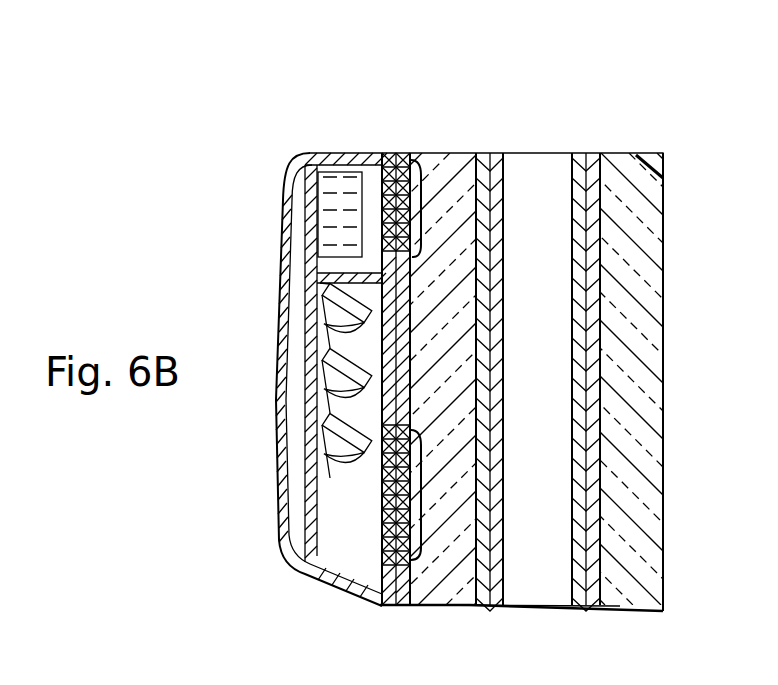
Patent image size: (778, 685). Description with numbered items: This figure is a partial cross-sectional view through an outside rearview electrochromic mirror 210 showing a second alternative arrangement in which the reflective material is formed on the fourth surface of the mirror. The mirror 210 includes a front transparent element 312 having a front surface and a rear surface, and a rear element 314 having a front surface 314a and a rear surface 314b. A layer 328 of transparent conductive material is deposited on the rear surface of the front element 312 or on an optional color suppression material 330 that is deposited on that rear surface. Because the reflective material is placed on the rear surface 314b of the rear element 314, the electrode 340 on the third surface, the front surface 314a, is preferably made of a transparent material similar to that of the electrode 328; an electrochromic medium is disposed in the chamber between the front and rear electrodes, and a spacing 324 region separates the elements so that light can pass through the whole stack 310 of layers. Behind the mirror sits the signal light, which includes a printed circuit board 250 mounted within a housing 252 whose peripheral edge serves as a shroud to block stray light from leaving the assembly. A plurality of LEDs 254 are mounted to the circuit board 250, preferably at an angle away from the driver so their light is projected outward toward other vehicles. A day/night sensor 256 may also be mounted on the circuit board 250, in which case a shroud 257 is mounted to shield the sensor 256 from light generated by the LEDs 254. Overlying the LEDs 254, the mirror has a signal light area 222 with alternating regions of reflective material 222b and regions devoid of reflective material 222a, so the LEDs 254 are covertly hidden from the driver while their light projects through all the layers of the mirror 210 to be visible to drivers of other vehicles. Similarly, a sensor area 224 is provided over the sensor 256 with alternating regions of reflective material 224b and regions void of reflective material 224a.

The electrochromic mirror 210 is at (447, 45).
The signal light area 222 is at (430, 478).
The regions devoid of reflective material 222a is at (383, 558).
The regions of reflective material 222b is at (383, 542).
The sensor area 224 is at (421, 204).
The regions void of reflective material 224a is at (369, 152).
The regions of reflective material 224b is at (366, 152).
The printed circuit board 250 is at (283, 563).
The housing 252 is at (350, 592).
The LEDs 254 is at (332, 360).
The day/night sensor 256 is at (342, 182).
The shroud 257 is at (335, 276).
The seal strip 310 is at (410, 147).
The front transparent element 312 is at (650, 488).
The rear element 314 is at (452, 602).
The front surface of rear element 314a is at (512, 607).
The rear surface of rear element 314b is at (419, 608).
The cavity 324 is at (556, 323).
The layer of transparent conductive material 328 is at (578, 153).
The color suppression material 330 is at (601, 153).
The electrode 340 is at (503, 153).